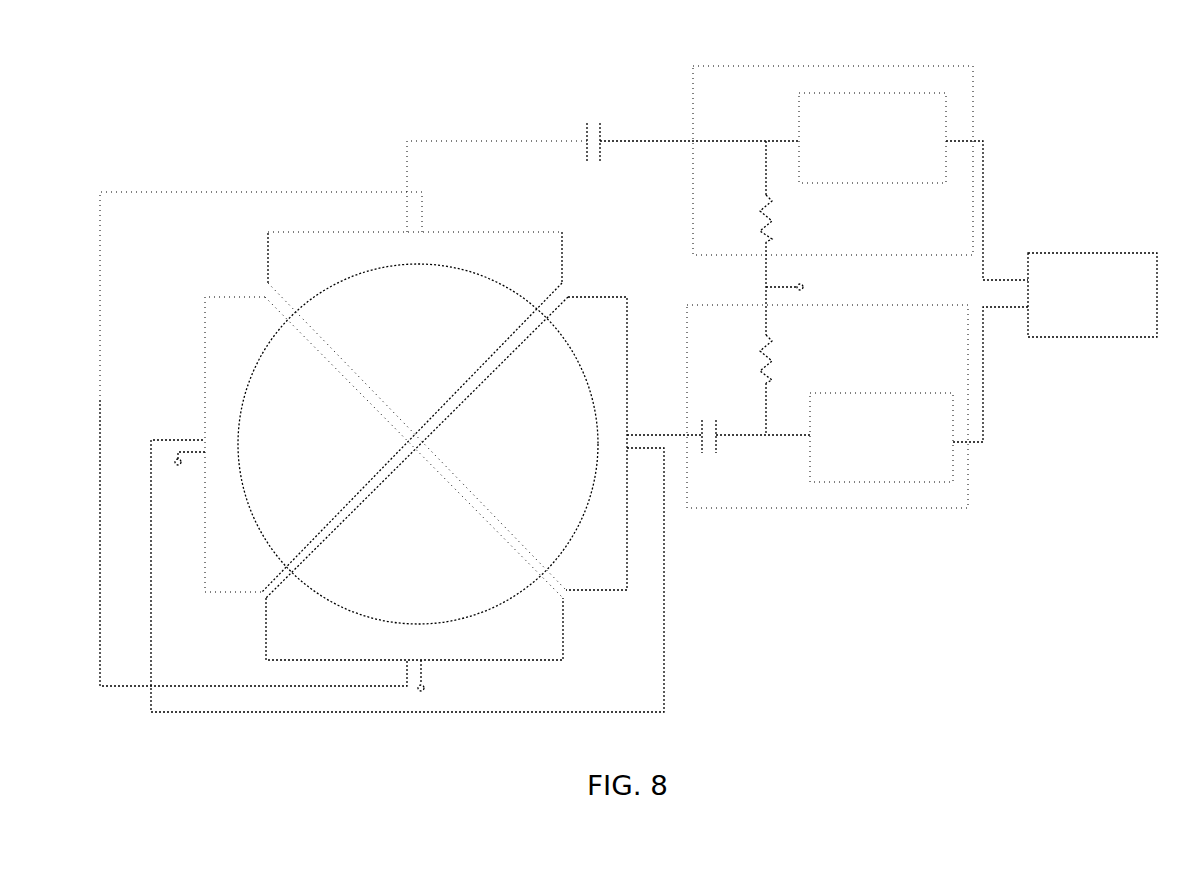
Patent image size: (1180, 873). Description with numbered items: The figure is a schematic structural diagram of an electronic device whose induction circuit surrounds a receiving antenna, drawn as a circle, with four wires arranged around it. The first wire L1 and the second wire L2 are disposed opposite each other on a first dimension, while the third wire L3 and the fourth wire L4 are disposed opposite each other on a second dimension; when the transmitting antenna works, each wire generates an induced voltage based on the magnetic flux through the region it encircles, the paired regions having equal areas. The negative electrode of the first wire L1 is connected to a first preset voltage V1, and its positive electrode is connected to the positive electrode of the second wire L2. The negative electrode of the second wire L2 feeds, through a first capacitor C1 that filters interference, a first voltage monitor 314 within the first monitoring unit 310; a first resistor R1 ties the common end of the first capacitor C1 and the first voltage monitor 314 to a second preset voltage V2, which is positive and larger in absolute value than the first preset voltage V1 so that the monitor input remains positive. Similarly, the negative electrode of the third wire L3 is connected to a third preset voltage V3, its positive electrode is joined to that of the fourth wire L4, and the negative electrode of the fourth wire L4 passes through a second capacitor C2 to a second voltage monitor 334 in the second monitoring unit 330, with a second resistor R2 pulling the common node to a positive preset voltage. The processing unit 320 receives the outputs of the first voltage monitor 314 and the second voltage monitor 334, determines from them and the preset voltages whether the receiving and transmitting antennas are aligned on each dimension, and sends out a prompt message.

The first wire L1 is at (228, 296).
The second wire L2 is at (601, 296).
The third wire L3 is at (509, 230).
The fourth wire L4 is at (566, 624).
The first capacitor C1 is at (719, 451).
The second capacitor C2 is at (592, 127).
The first resistor R1 is at (791, 359).
The second resistor R2 is at (791, 218).
The first preset voltage V1 is at (186, 474).
The second preset voltage V2 is at (822, 288).
The third preset voltage V3 is at (437, 679).
The second monitoring unit 330 is at (974, 117).
The second voltage monitor 334 is at (872, 138).
The first monitoring unit 310 is at (970, 483).
The first voltage monitor 314 is at (881, 437).
The processing unit 320 is at (1092, 295).